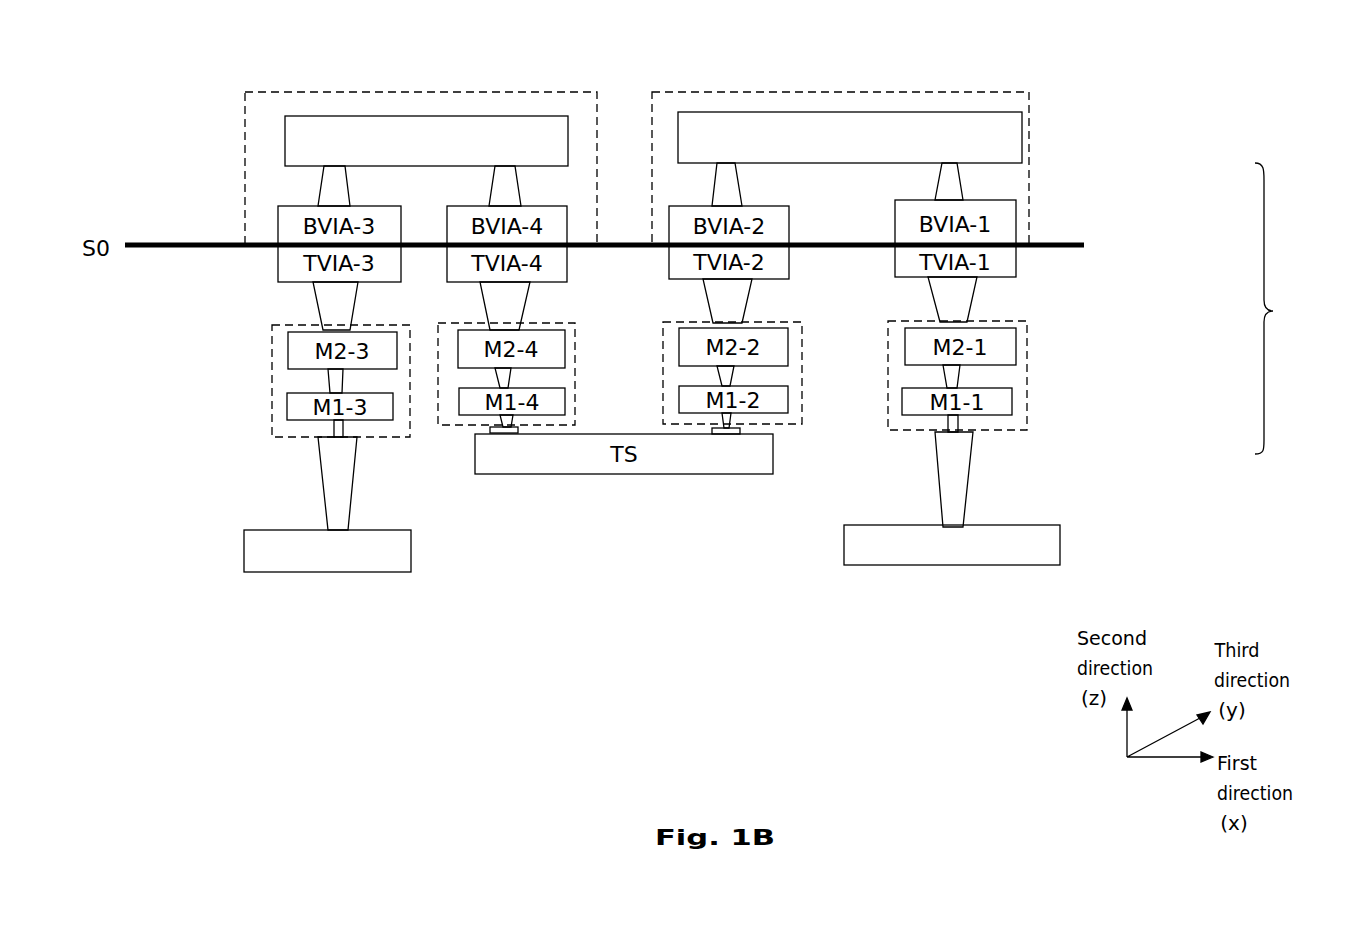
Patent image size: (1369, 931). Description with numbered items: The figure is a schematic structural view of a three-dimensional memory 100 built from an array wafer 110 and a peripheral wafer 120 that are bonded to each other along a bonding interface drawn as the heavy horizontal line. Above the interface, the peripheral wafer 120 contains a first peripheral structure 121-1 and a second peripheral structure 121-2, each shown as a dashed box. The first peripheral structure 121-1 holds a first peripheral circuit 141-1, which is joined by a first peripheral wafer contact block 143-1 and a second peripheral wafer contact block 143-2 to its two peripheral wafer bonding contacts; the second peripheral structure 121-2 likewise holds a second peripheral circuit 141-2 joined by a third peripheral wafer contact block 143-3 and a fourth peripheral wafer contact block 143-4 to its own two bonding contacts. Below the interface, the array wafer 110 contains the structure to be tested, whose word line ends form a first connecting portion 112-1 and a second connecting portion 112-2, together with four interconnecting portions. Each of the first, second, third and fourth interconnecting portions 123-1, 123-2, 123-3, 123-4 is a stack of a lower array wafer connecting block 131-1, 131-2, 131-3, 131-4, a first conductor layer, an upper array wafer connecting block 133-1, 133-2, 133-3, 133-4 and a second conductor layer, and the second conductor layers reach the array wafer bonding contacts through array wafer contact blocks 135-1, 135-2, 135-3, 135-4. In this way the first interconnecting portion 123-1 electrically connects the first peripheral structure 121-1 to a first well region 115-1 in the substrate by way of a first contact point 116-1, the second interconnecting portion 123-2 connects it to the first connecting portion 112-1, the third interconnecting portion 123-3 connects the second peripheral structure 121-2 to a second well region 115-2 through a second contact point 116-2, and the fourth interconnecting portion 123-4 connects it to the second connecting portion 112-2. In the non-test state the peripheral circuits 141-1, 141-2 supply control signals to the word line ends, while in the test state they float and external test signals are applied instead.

The 3D memory 100 is at (1316, 326).
The array wafer 110 is at (1240, 476).
The peripheral wafer 120 is at (1240, 176).
The first connecting portion 112-1 is at (723, 436).
The second connecting portion 112-2 is at (505, 436).
The first well region 115-1 is at (1060, 548).
The second well region 115-2 is at (244, 557).
The first contact point 116-1 is at (970, 493).
The second contact point 116-2 is at (324, 495).
The first peripheral structure 121-1 is at (872, 92).
The second peripheral structure 121-2 is at (402, 92).
The first interconnecting portion 123-1 is at (1027, 345).
The second interconnecting portion 123-2 is at (802, 345).
The third interconnecting portion 123-3 is at (272, 340).
The fourth interconnecting portion 123-4 is at (575, 343).
The array wafer connecting block 131-1 is at (960, 422).
The array wafer connecting block 131-2 is at (732, 418).
The array wafer connecting block 131-3 is at (333, 430).
The array wafer connecting block 131-4 is at (508, 423).
The array wafer connecting block 133-1 is at (960, 378).
The array wafer connecting block 133-2 is at (734, 376).
The array wafer connecting block 133-3 is at (328, 380).
The array wafer connecting block 133-4 is at (511, 376).
The array wafer contact block 135-1 is at (975, 300).
The array wafer contact block 135-2 is at (750, 300).
The array wafer contact block 135-3 is at (315, 302).
The array wafer contact block 135-4 is at (520, 296).
The first peripheral circuit 141-1 is at (1015, 128).
The second peripheral circuit 141-2 is at (285, 140).
The first peripheral wafer contact block 143-1 is at (960, 187).
The second peripheral wafer contact block 143-2 is at (738, 183).
The third peripheral wafer contact block 143-3 is at (321, 185).
The fourth peripheral wafer contact block 143-4 is at (491, 190).